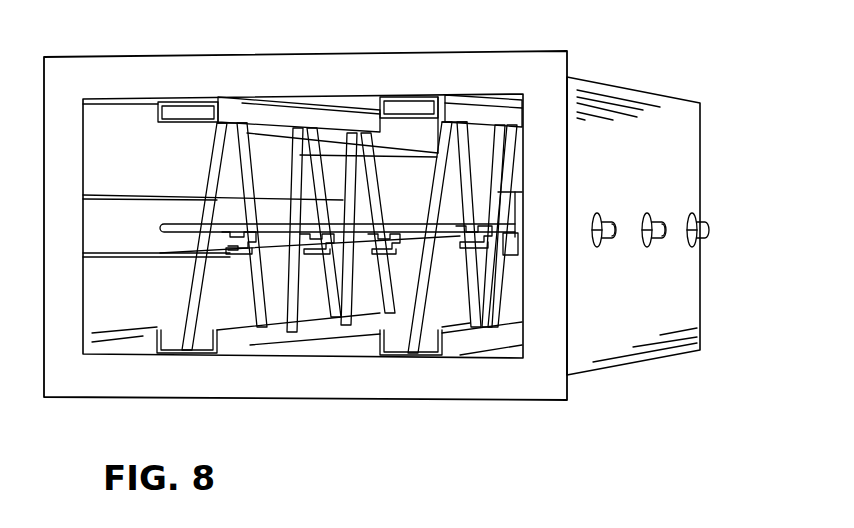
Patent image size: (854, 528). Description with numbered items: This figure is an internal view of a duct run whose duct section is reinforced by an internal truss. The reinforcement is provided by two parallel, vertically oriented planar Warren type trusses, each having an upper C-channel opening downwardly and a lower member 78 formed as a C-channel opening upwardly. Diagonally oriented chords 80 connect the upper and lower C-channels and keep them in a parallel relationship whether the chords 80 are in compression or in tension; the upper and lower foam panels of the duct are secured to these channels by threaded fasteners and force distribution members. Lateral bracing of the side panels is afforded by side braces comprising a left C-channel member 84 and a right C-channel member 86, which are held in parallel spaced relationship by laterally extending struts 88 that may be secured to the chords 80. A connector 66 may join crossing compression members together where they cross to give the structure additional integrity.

The connector 66 is at (237, 257).
The lower member 78 is at (185, 348).
The diagonally oriented chord 80 is at (310, 152).
The left C-channel member 84 is at (118, 220).
The right C-channel member 86 is at (502, 206).
The laterally extending strut 88 is at (186, 222).